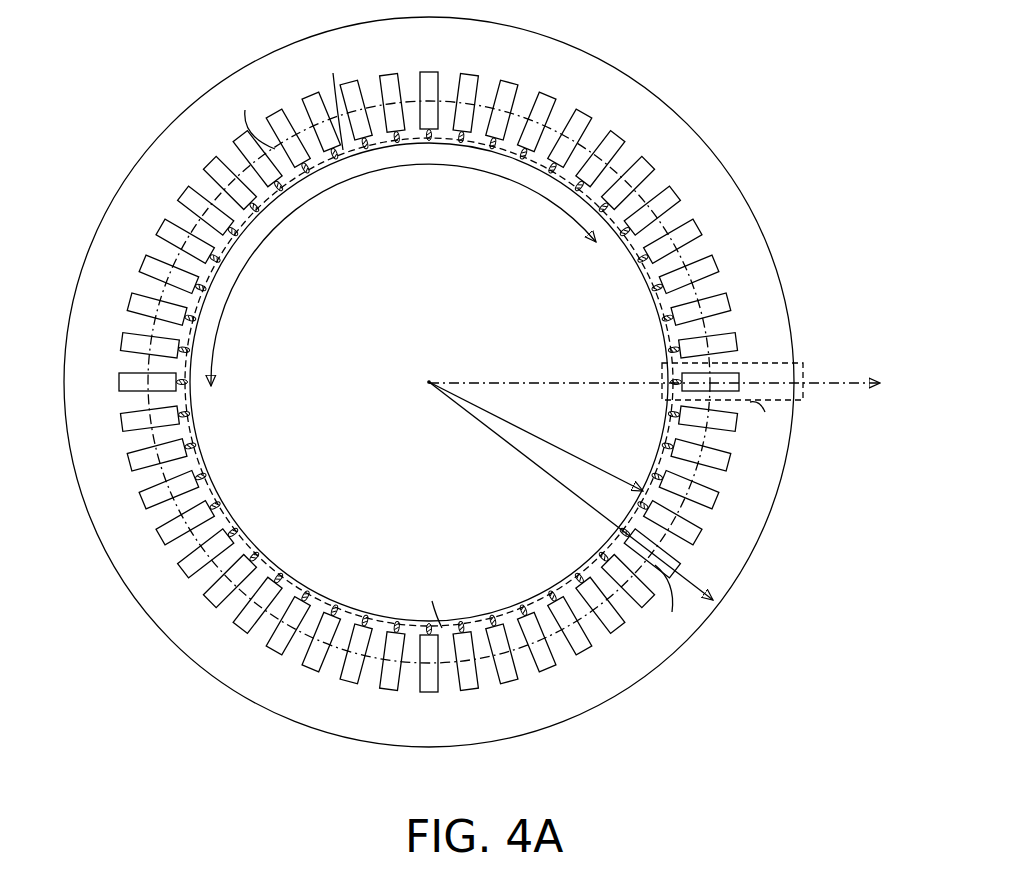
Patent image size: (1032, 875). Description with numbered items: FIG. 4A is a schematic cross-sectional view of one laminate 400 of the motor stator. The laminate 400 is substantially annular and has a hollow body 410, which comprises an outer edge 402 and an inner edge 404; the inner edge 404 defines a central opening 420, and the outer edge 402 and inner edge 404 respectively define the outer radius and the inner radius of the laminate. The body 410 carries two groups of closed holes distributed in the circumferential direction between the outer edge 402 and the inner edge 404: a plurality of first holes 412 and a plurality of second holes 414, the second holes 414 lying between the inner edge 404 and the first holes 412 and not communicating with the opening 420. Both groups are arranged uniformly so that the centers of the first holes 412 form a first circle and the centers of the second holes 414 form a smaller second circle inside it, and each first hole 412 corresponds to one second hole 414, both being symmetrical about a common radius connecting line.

The stator assembly 400 is at (472, 382).
The outer edge 402 is at (782, 278).
The inner edge 404 is at (658, 307).
The body 410 is at (443, 382).
The first holes 412 is at (550, 97).
The second holes 414 is at (642, 258).
The opening 420 is at (421, 418).